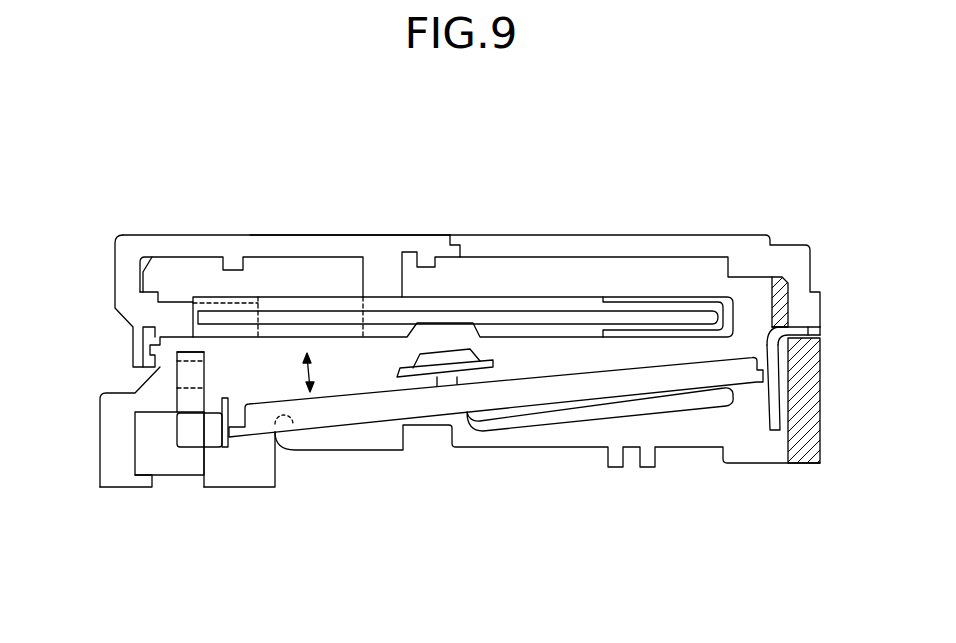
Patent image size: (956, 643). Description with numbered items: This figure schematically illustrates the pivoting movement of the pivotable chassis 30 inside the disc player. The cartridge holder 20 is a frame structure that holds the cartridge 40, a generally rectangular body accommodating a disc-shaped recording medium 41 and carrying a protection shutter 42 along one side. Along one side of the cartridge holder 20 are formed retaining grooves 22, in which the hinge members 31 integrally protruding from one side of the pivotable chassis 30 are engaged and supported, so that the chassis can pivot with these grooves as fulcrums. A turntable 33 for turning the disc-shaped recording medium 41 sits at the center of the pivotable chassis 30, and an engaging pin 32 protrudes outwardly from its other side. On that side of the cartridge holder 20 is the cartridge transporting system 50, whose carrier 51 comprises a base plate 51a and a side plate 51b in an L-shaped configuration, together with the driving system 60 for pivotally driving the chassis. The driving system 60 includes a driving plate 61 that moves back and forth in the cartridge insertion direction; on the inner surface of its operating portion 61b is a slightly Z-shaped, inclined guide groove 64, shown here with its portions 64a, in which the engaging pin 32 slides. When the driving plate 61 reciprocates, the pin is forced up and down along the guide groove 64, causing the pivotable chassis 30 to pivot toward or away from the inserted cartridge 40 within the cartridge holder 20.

The cartridge holder 20 is at (660, 240).
The retaining grooves 22 is at (828, 338).
The pivotable chassis 30 is at (549, 402).
The hinge members 31 is at (810, 331).
The engaging pin 32 is at (187, 430).
The turntable 33 is at (435, 352).
The cartridge 40 is at (463, 264).
The disc-shaped recording medium 41 is at (532, 317).
The protection shutter 42 is at (640, 280).
The cartridge transporting system 50 is at (245, 223).
The carrier 51 is at (178, 243).
The base plate 51a is at (335, 243).
The side plate 51b is at (115, 272).
The driving system 60 is at (88, 432).
The driving plate 61 is at (167, 457).
The operating portion 61b is at (215, 454).
The guide groove 64 is at (198, 402).
The slider bar portion 64a is at (198, 374).